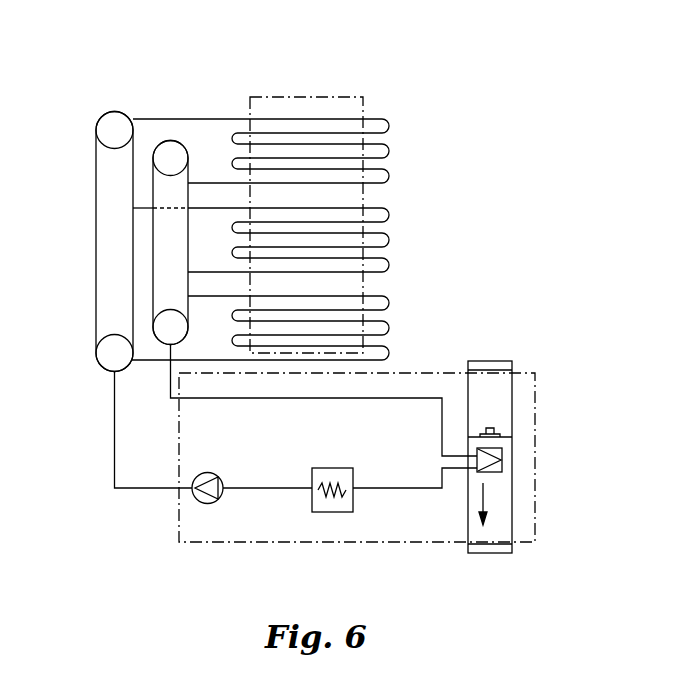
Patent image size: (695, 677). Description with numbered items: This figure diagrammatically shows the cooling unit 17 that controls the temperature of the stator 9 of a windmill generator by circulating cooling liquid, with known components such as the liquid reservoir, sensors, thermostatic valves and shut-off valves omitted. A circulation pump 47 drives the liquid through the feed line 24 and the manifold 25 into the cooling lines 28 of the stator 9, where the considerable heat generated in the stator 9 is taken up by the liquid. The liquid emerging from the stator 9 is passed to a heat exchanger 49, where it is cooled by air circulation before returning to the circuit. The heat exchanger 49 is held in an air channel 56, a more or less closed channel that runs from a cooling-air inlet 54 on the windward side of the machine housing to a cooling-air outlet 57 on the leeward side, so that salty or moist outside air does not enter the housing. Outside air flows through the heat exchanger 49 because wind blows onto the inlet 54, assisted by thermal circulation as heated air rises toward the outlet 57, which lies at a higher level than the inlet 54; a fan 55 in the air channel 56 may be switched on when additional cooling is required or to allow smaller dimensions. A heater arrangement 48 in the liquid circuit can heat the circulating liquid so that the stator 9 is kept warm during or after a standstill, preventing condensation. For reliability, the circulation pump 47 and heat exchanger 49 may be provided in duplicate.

The stator 9 is at (318, 97).
The cooling unit 17 is at (444, 372).
The feed line 24 is at (115, 436).
The manifold 25 is at (113, 112).
The cooling lines 28 is at (389, 126).
The circulation pump 47 is at (207, 503).
The heater arrangement 48 is at (332, 512).
The heat exchanger 49 is at (502, 460).
The cooling-air inlet 54 is at (512, 365).
The fan 55 is at (512, 435).
The air channel 56 is at (490, 397).
The cooling-air outlet 57 is at (490, 553).